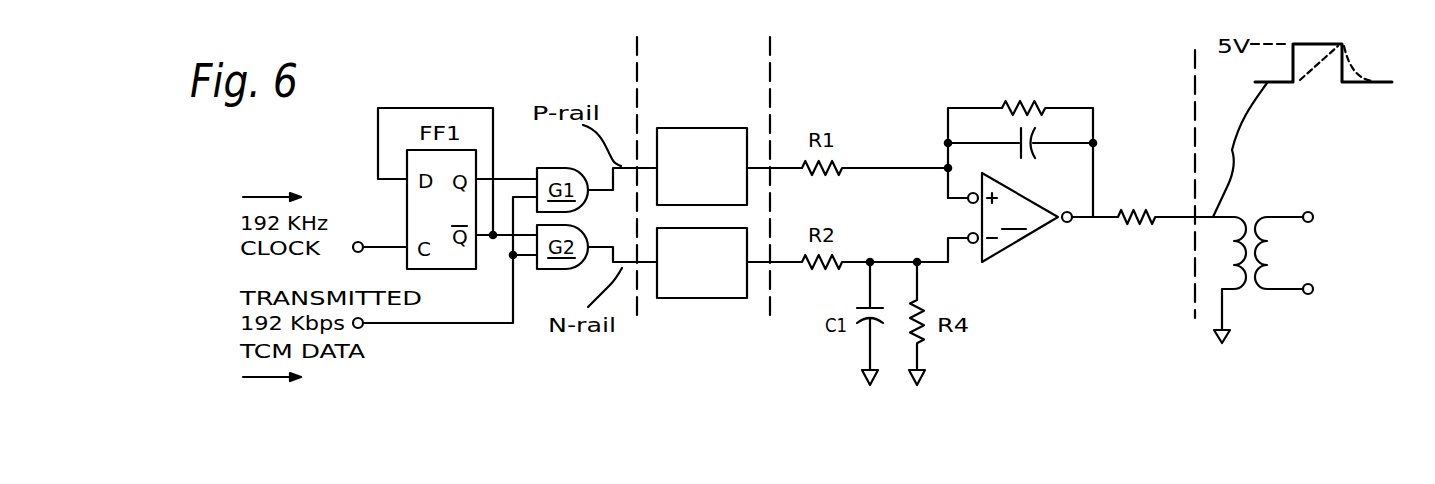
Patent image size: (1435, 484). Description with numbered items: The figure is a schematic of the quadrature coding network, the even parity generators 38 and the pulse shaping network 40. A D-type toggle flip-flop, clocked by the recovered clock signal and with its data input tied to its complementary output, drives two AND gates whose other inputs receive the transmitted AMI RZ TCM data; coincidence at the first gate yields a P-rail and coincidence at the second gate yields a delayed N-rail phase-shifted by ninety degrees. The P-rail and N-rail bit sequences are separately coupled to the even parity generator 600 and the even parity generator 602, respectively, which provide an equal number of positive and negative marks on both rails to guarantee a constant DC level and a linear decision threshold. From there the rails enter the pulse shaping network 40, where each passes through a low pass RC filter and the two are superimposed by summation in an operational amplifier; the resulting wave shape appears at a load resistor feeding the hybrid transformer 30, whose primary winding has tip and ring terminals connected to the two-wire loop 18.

The even parity generators 38 is at (719, 50).
The pulse shaping network 40 is at (999, 52).
The even parity generator 600 is at (702, 128).
The even parity generator 602 is at (702, 287).
The hybrid transformer 30 is at (1255, 198).
The two-wire loop 18 is at (1350, 252).